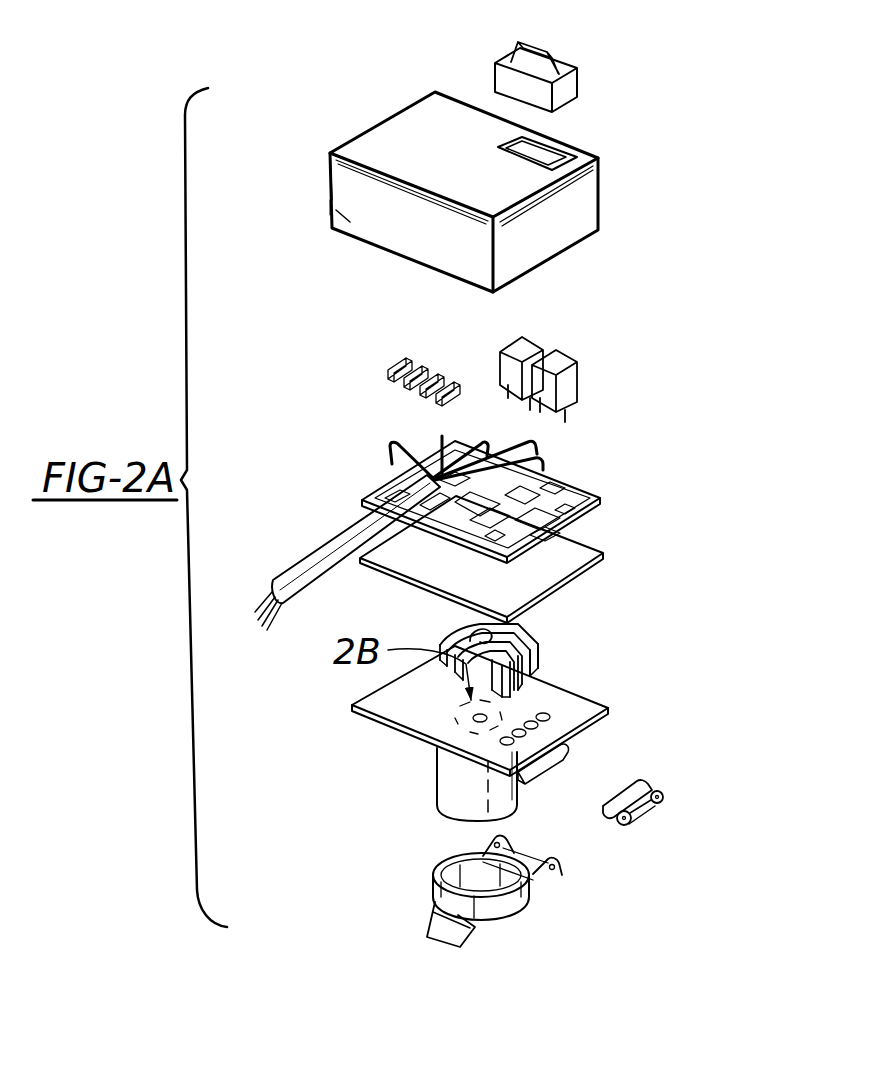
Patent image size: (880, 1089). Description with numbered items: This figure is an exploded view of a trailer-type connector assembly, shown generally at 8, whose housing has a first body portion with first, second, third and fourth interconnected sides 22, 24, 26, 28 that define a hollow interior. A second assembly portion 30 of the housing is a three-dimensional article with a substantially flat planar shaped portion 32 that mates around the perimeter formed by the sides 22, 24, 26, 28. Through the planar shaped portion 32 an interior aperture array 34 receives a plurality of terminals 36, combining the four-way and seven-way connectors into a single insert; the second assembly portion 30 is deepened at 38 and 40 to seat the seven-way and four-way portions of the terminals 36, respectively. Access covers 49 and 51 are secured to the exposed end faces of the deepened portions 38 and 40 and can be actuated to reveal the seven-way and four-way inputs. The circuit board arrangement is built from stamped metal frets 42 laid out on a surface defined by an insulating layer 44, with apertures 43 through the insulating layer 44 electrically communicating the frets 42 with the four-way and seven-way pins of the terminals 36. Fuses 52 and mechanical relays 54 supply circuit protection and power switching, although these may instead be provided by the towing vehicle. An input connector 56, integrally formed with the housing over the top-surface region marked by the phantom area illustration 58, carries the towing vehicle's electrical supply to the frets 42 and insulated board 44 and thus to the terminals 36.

The sensor assembly 8 is at (303, 208).
The first side 22 is at (350, 222).
The second side 24 is at (555, 242).
The third side 26 is at (328, 171).
The fourth side 28 is at (598, 200).
The second assembly portion 30 is at (411, 815).
The planar shaped portion 32 is at (393, 712).
The interior aperture array 34 is at (503, 712).
The terminals 36 is at (550, 647).
The deepened portion 38 is at (452, 803).
The deepened portion 40 is at (560, 762).
The stamped metal frets 42 is at (550, 434).
The apertures 43 is at (462, 520).
The insulating layer 44 is at (588, 490).
The access cover 49 is at (560, 883).
The access cover 51 is at (664, 807).
The fuses 52 is at (386, 376).
The mechanical relays 54 is at (588, 368).
The input connector 56 is at (578, 69).
The phantom area illustration 58 is at (567, 156).